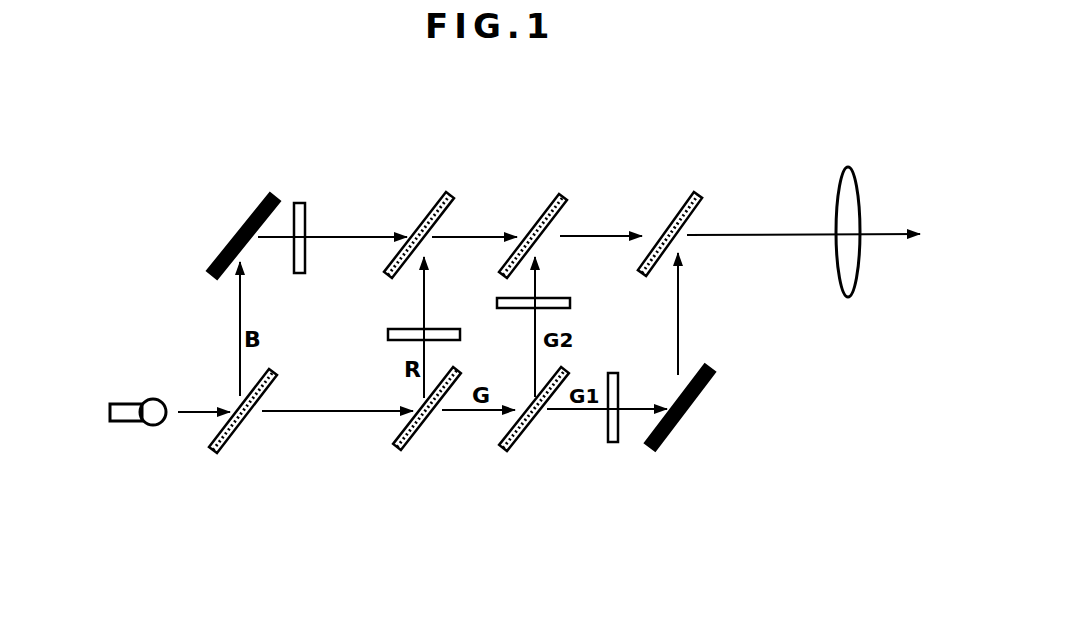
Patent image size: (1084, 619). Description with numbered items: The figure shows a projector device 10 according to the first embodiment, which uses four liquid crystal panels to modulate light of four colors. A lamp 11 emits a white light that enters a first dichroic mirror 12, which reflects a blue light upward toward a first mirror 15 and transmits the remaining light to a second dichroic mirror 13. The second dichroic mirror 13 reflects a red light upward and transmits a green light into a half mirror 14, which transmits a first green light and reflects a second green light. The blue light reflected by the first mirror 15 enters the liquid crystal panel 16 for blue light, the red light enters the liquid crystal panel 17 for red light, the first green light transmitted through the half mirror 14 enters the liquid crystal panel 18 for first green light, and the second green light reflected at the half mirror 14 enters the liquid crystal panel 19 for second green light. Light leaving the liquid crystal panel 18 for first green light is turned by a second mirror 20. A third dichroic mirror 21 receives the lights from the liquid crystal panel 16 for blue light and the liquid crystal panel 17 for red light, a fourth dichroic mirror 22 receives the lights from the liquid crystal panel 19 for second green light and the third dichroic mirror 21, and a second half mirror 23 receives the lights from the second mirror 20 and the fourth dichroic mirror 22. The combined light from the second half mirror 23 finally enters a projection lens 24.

The projector device 10 is at (814, 341).
The lamp 11 is at (161, 398).
The first dichroic mirror 12 is at (235, 432).
The second dichroic mirror 13 is at (417, 430).
The half mirror 14 is at (525, 425).
The first mirror 15 is at (243, 227).
The liquid crystal panel for blue light 16 is at (298, 203).
The liquid crystal panel for red light 17 is at (388, 335).
The liquid crystal panel for first green light 18 is at (613, 443).
The liquid crystal panel for second green light 19 is at (570, 304).
The second mirror 20 is at (690, 410).
The third dichroic mirror 21 is at (432, 212).
The fourth dichroic mirror 22 is at (547, 212).
The second half mirror 23 is at (680, 207).
The projection lens 24 is at (850, 167).